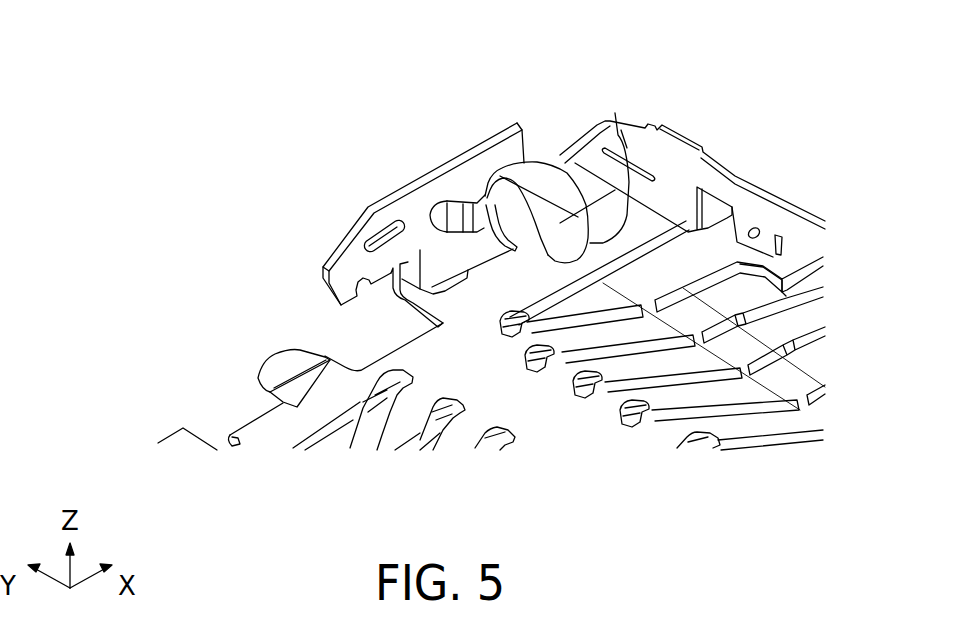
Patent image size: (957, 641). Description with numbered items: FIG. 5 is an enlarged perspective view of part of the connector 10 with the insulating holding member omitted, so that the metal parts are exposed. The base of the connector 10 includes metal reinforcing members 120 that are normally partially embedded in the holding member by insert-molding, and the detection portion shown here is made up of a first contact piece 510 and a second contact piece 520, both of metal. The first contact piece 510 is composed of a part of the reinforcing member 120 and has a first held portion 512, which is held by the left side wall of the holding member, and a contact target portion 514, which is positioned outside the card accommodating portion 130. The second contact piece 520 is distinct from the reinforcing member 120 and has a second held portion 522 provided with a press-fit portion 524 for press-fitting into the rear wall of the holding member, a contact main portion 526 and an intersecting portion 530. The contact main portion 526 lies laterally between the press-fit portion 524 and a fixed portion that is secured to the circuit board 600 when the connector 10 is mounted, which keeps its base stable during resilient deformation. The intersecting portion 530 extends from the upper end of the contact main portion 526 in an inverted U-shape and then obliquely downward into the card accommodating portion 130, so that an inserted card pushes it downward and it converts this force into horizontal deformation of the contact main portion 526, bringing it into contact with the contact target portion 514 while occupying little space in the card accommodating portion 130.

The connector 10 is at (292, 27).
The reinforcing member 120 is at (188, 393).
The card accommodating portion 130 is at (535, 418).
The first contact piece 510 is at (469, 214).
The first held portion 512 is at (437, 302).
The contact target portion 514 is at (446, 193).
The second contact piece 520 is at (728, 158).
The second held portion 522 is at (673, 160).
The press-fit portion 524 is at (758, 229).
The contact main portion 526 is at (578, 150).
The intersecting portion 530 is at (615, 113).
The circuit board 600 is at (233, 360).